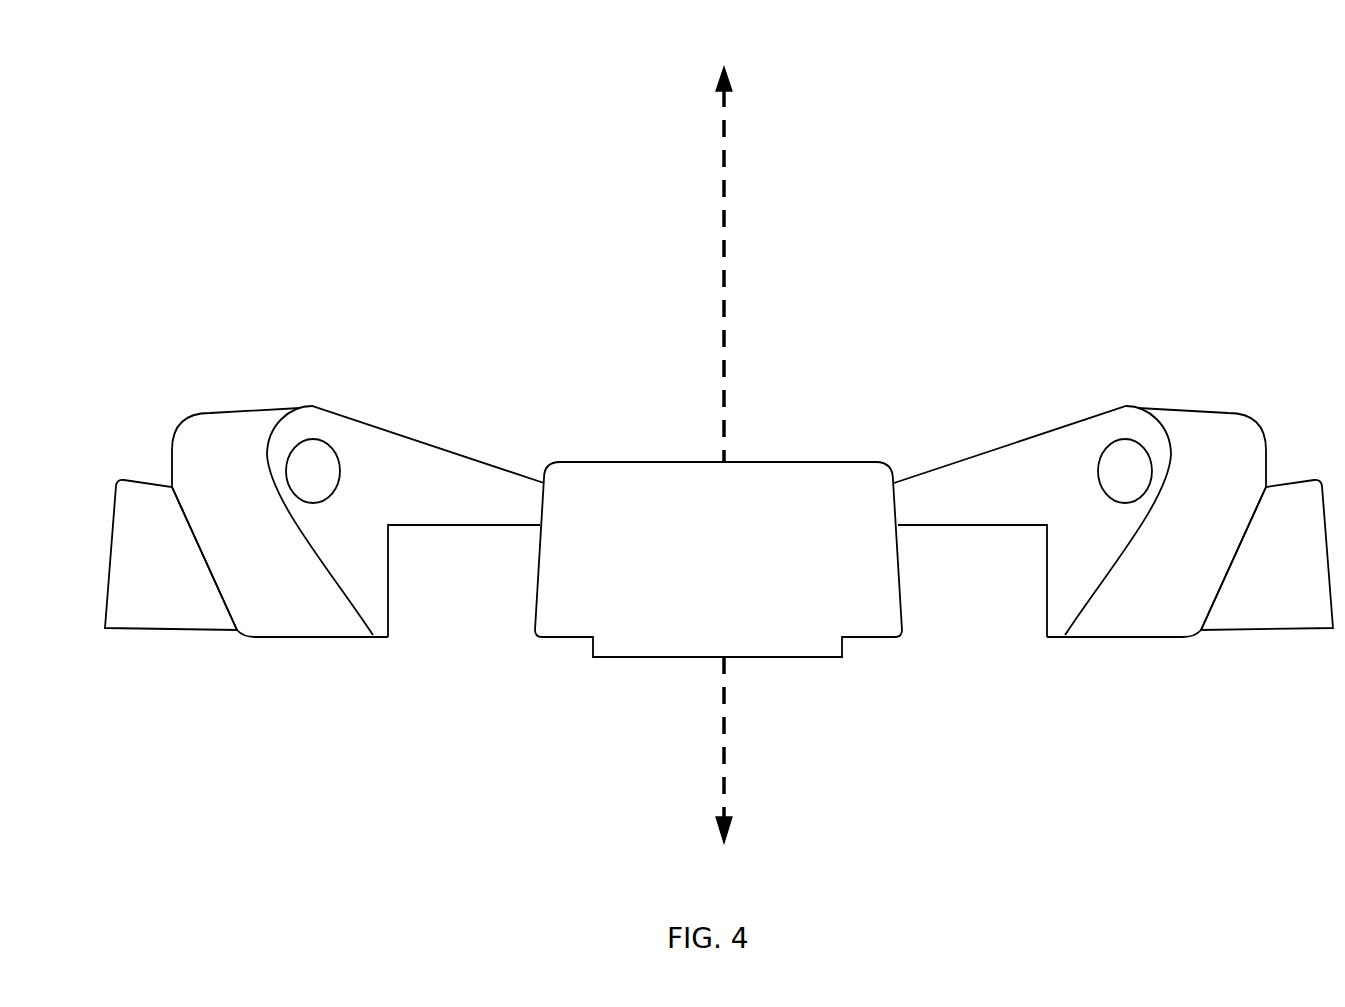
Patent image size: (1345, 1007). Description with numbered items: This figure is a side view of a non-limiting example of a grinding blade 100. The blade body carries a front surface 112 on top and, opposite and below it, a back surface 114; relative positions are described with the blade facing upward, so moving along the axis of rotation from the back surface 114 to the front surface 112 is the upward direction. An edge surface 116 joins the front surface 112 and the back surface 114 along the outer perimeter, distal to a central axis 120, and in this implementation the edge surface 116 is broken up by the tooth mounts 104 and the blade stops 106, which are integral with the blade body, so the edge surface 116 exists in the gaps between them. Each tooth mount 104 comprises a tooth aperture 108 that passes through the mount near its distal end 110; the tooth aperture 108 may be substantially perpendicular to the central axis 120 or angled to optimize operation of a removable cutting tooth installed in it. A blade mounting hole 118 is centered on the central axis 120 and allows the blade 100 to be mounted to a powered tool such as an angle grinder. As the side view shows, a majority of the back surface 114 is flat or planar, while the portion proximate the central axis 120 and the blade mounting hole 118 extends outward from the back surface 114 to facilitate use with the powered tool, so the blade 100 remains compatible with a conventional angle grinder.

The grinding blade 100 is at (1208, 140).
The tooth mount 104 is at (208, 465).
The blade stop 106 is at (613, 617).
The tooth aperture 108 is at (317, 455).
The distal end 110 is at (305, 417).
The front surface 112 is at (938, 523).
The back surface 114 is at (960, 642).
The edge surface 116 is at (432, 602).
The blade mounting hole 118 is at (742, 680).
The central axis 120 is at (726, 128).